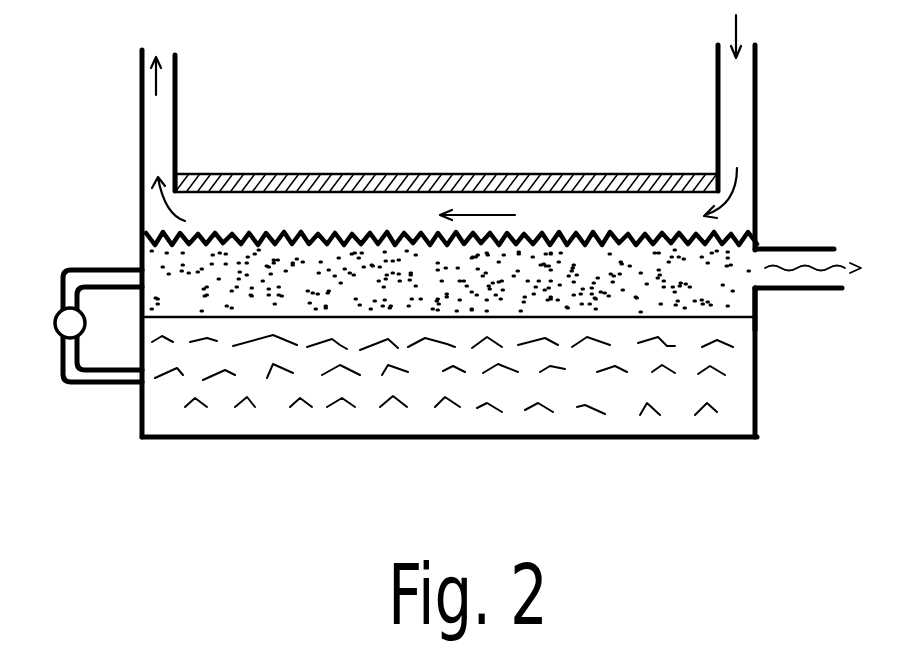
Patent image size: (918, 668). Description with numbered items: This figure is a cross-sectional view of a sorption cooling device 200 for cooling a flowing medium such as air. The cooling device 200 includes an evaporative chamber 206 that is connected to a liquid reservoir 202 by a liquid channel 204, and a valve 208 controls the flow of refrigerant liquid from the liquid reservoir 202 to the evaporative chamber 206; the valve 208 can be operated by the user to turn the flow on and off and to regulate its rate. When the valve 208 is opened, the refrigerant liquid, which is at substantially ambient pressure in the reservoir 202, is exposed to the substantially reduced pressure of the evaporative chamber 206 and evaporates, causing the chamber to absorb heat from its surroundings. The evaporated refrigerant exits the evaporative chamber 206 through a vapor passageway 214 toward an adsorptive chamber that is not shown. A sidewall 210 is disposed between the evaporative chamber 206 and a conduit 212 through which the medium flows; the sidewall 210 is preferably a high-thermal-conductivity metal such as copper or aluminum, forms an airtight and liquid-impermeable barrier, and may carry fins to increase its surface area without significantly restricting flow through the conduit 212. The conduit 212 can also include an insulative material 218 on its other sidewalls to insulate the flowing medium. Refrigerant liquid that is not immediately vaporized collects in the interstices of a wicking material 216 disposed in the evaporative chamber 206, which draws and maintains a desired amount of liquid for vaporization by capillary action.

The cooling device 200 is at (427, 137).
The liquid reservoir 202 is at (587, 440).
The liquid channel 204 is at (95, 385).
The evaporative chamber 206 is at (478, 283).
The valve 208 is at (54, 318).
The sidewall 210 is at (285, 236).
The conduit 212 is at (597, 224).
The vapor passageway 214 is at (801, 291).
The wicking material 216 is at (758, 300).
The insulative material 218 is at (574, 174).